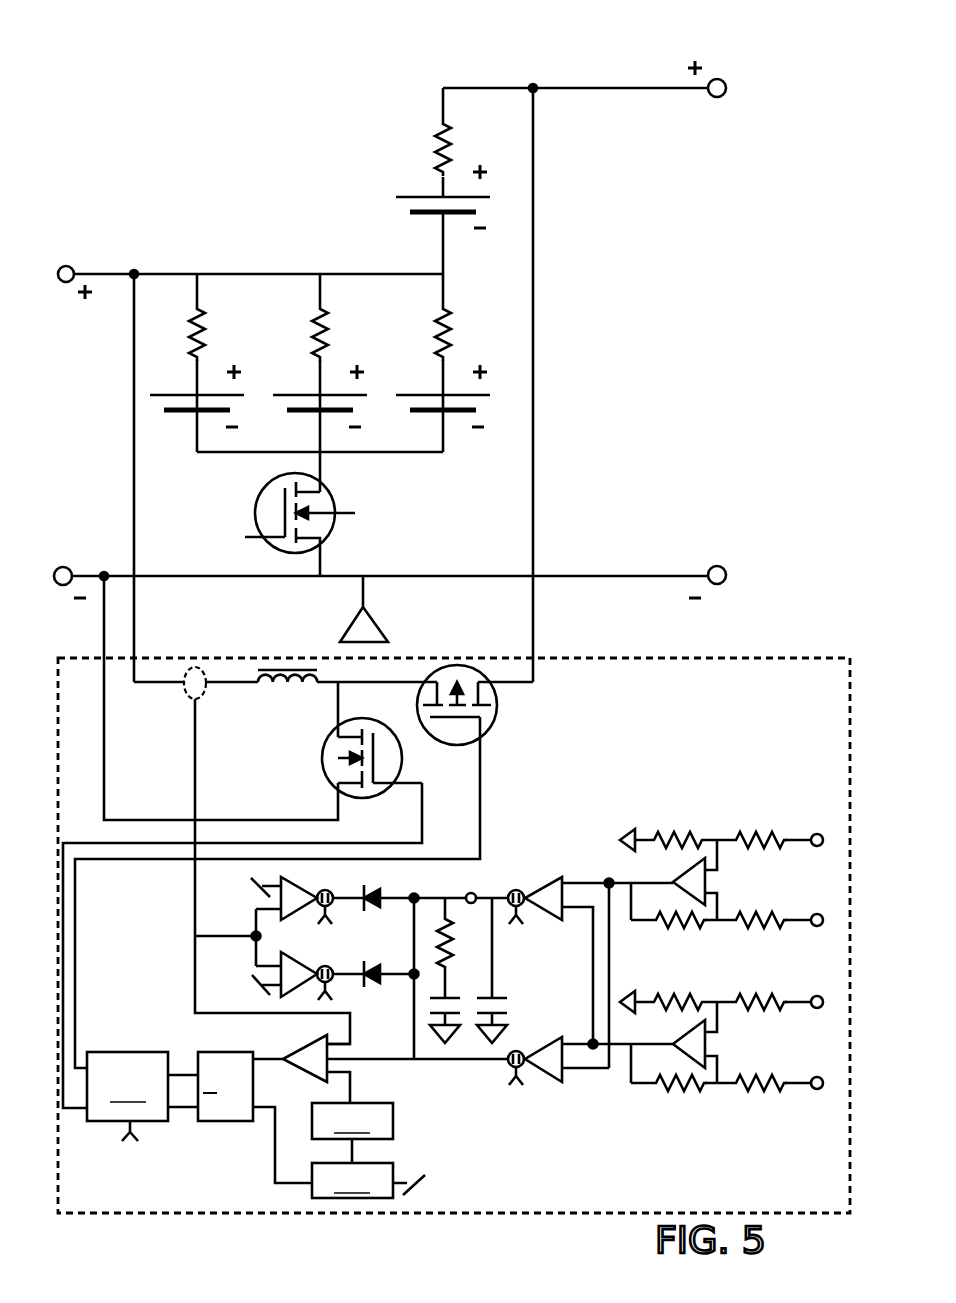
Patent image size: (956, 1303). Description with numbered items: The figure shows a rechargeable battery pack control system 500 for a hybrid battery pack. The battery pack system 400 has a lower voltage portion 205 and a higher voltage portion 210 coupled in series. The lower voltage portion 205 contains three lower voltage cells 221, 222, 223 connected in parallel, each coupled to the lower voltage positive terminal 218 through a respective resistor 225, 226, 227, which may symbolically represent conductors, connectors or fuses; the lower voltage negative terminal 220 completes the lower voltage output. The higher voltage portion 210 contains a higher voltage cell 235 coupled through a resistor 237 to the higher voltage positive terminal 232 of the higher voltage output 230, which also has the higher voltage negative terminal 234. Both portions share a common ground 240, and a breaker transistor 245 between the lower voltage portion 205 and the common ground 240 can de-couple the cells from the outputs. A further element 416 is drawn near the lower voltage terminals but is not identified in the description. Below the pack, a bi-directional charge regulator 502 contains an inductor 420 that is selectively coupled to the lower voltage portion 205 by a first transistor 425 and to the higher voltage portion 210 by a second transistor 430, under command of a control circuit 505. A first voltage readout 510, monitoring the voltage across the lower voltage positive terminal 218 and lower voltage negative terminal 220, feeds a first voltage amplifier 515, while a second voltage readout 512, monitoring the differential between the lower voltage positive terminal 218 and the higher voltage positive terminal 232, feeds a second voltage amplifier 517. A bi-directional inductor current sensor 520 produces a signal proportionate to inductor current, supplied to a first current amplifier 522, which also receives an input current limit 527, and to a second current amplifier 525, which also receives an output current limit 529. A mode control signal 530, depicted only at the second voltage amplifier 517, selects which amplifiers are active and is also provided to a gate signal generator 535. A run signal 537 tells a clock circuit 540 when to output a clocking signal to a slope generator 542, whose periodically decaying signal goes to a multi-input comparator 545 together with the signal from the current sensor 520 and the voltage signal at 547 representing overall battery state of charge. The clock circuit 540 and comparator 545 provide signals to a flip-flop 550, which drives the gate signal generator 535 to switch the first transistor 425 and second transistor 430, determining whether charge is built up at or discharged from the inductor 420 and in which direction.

The rechargeable battery pack control system 500 is at (118, 44).
The battery pack system 400 is at (235, 77).
The battery pack terminals 416 is at (84, 207).
The lower voltage positive terminal 218 is at (72, 266).
The lower voltage negative terminal 220 is at (70, 567).
The lower voltage portion 205 is at (288, 262).
The resistor 225 is at (200, 318).
The resistor 226 is at (323, 318).
The resistor 227 is at (446, 318).
The lower voltage cell 221 is at (197, 418).
The lower voltage cell 222 is at (320, 418).
The lower voltage cell 223 is at (443, 418).
The higher voltage portion 210 is at (375, 137).
The resistor 237 is at (453, 125).
The higher voltage cell 235 is at (432, 226).
The breaker transistor 245 is at (343, 535).
The common ground 240 is at (388, 625).
The higher voltage output 230 is at (672, 45).
The higher voltage positive terminal 232 is at (716, 97).
The higher voltage negative terminal 234 is at (716, 566).
The bi-directional charge regulator 502 is at (670, 658).
The control circuit 505 is at (645, 740).
The bi-directional inductor current sensor 520 is at (186, 693).
The inductor 420 is at (286, 692).
The first transistor 425 is at (317, 782).
The second transistor 430 is at (488, 738).
The output current limit 529 is at (248, 890).
The input current limit 527 is at (248, 993).
The second current amplifier 525 is at (325, 887).
The first current amplifier 522 is at (325, 962).
The voltage signal 547 is at (469, 892).
The first voltage amplifier 515 is at (525, 885).
The first voltage readout 510 is at (720, 823).
The second voltage amplifier 517 is at (525, 1047).
The mode control signal 530 is at (520, 1086).
The second voltage readout 512 is at (720, 1106).
The multi-input comparator 545 is at (307, 1046).
The flip-flop 550 is at (230, 1122).
The gate signal generator 535 is at (142, 1096).
The slope generator 542 is at (352, 1133).
The clock circuit 540 is at (352, 1180).
The run signal 537 is at (428, 1190).